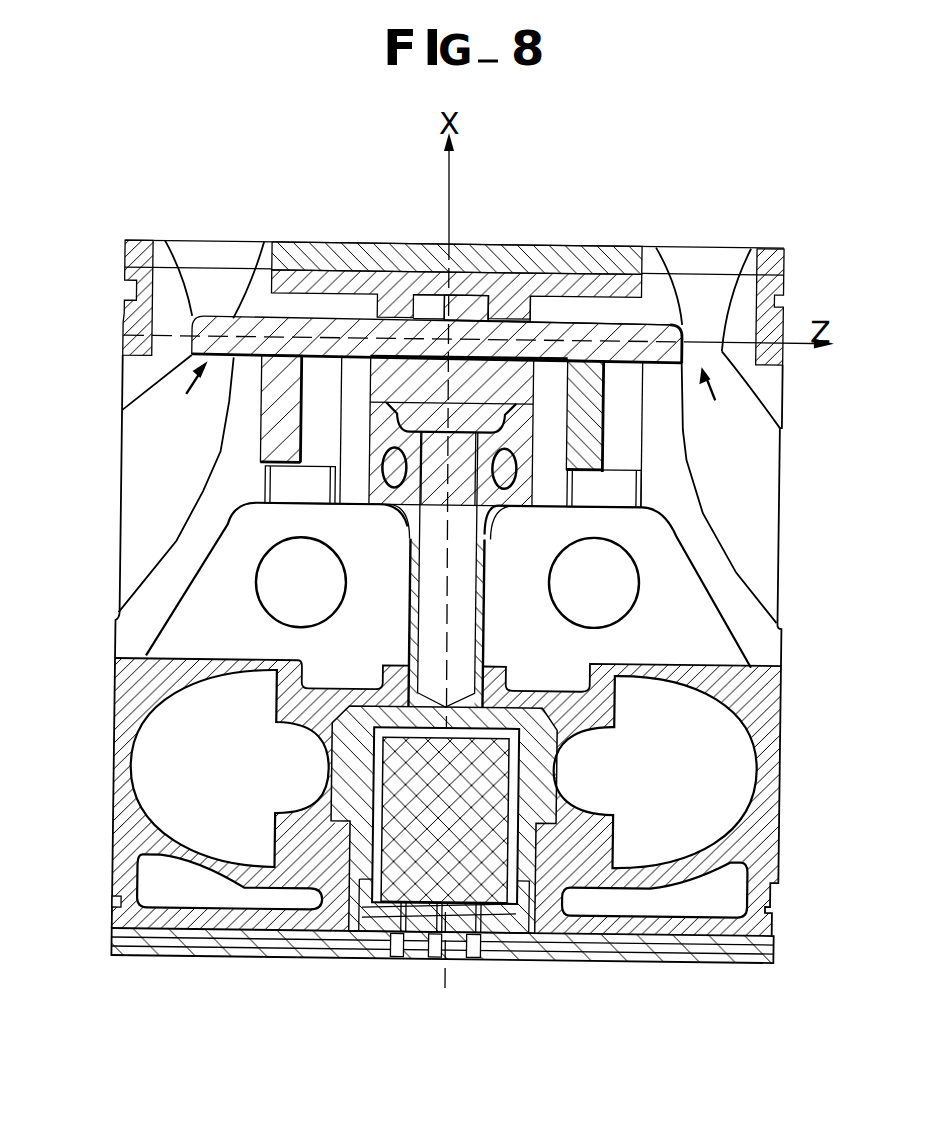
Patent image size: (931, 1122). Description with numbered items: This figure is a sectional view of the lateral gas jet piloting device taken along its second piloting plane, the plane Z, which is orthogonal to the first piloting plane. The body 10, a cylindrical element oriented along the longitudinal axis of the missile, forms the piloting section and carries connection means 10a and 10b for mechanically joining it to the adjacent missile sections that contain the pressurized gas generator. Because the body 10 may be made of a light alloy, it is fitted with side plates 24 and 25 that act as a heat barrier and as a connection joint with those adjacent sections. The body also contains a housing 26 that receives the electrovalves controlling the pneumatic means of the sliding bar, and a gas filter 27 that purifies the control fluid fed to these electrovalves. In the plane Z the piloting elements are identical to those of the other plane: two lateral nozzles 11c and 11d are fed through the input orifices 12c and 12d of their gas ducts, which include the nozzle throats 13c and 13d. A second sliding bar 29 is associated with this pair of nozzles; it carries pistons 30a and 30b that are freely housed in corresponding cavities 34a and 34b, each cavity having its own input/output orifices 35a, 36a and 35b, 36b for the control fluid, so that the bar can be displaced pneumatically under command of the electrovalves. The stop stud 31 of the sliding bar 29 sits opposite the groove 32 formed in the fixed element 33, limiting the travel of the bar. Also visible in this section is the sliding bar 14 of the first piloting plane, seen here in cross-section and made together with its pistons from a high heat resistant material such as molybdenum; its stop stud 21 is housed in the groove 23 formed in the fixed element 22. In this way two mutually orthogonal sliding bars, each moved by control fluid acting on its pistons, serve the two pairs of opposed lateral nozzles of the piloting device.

The body 10 is at (115, 690).
The means for mechanical connection 10a is at (114, 895).
The means for mechanical connection 10b is at (120, 283).
The nozzle 11c is at (778, 522).
The nozzle 11d is at (118, 520).
The input orifice 12c is at (692, 243).
The input orifice 12d is at (226, 240).
The nozzle throat 13c is at (594, 378).
The nozzle throat 13d is at (421, 377).
The sliding bar 14 is at (384, 388).
The stop stud 21 is at (483, 410).
The fixed element 22 is at (444, 501).
The groove 23 is at (437, 437).
The side plate 24 is at (265, 945).
The side plate 25 is at (318, 216).
The housing 26 is at (140, 745).
The gas filter 27 is at (397, 782).
The second sliding bar 29 is at (682, 318).
The piston 30a is at (612, 435).
The piston 30b is at (268, 424).
The stop stud 31 is at (421, 298).
The groove 32 is at (466, 298).
The fixed element 33 is at (519, 292).
The cavity 34a is at (604, 489).
The cavity 34b is at (300, 485).
The input/output orifice 35a is at (620, 506).
The input/output orifice 35b is at (328, 506).
The input/output orifice 36a is at (563, 506).
The input/output orifice 36b is at (279, 506).